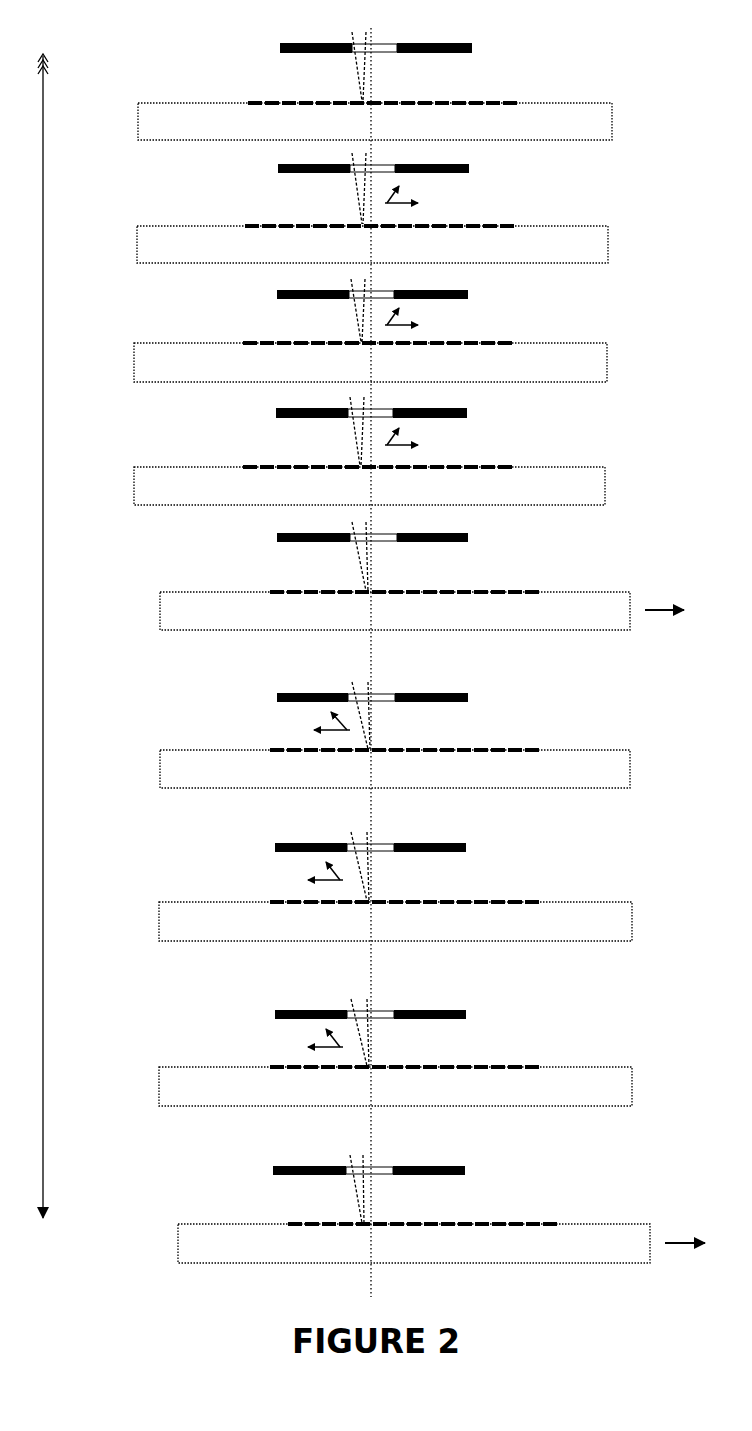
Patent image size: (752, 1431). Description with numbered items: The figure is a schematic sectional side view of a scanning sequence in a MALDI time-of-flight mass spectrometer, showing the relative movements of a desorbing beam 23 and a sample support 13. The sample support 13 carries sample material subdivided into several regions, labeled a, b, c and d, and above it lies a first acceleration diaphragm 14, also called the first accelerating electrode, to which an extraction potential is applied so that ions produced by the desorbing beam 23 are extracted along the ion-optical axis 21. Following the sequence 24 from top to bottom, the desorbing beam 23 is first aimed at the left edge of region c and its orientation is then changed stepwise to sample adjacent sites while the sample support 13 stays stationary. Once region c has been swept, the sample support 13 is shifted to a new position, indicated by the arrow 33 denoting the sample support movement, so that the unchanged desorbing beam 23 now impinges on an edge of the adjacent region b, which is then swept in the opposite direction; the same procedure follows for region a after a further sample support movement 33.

The ion-optical axis 21 is at (374, 650).
The desorbing beam 23 is at (350, 627).
The first acceleration diaphragm 14 is at (387, 609).
The sample support 13 is at (392, 683).
The sequence 24 is at (61, 636).
The sample support movement 33 is at (675, 906).